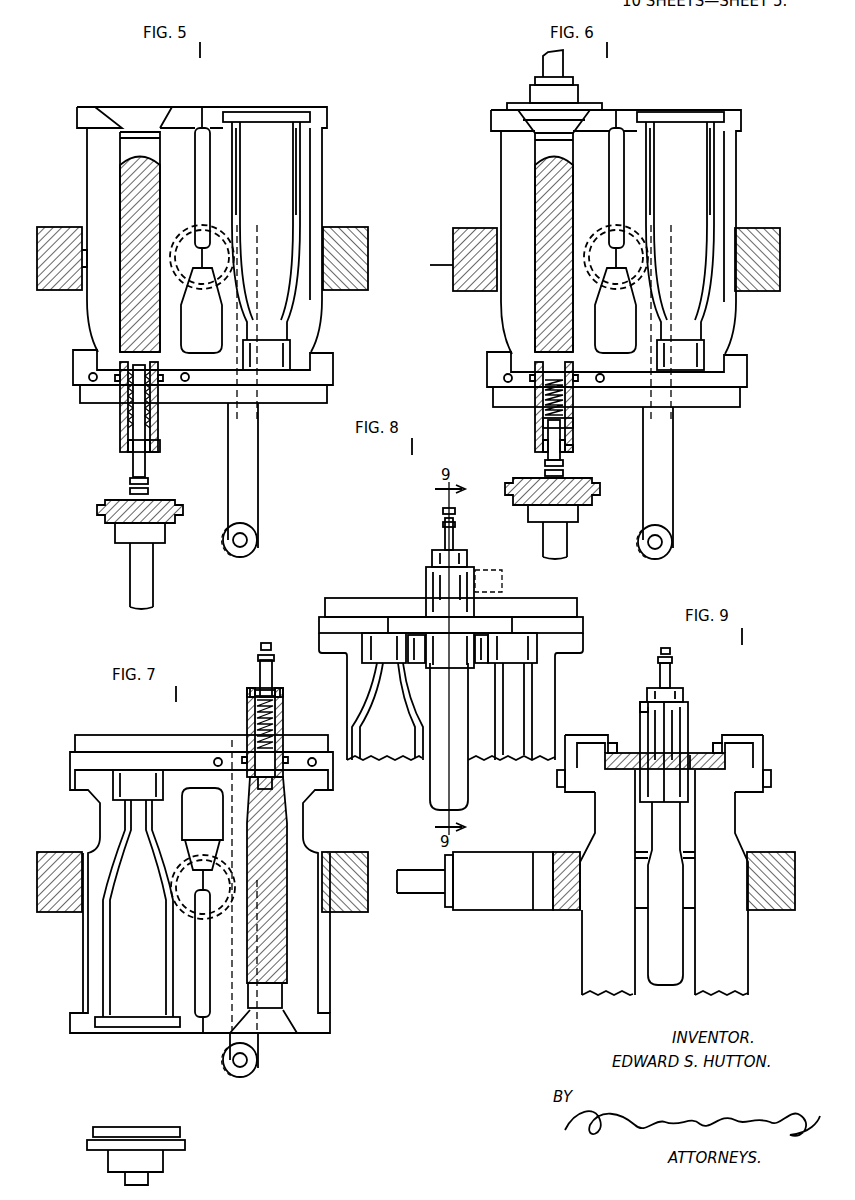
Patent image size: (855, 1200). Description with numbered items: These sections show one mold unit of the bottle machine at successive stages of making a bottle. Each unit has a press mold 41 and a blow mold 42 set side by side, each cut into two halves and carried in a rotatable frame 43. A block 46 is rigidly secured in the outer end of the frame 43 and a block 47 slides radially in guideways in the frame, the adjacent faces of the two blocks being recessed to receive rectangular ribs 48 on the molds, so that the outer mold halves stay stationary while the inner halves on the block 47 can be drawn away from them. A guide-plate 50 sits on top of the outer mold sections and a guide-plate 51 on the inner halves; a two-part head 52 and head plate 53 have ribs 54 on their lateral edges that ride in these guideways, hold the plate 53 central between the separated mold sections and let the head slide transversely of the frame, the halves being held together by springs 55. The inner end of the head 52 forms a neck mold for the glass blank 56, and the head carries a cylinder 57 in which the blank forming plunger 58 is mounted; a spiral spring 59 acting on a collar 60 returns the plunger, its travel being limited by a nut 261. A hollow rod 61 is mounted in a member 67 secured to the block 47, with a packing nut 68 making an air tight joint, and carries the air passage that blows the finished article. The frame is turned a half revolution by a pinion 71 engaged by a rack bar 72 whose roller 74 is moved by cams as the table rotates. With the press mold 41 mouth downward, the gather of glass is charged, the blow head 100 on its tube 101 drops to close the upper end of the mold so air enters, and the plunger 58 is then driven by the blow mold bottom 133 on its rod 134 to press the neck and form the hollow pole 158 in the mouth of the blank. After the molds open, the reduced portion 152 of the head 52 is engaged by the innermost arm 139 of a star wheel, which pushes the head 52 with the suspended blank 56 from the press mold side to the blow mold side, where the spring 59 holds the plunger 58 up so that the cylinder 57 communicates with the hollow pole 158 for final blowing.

In FIG. 5, the press mold 41 is at (96, 185).
In FIG. 6, the press mold 41 is at (510, 184).
In FIG. 8, the press mold 41 is at (522, 762).
In FIG. 7, the press mold 41 is at (318, 957).
In FIG. 5, the blow mold 42 is at (318, 183).
In FIG. 6, the blow mold 42 is at (732, 183).
In FIG. 8, the blow mold 42 is at (395, 763).
In FIG. 7, the blow mold 42 is at (84, 957).
In FIG. 5, the rotatable frame 43 is at (368, 263).
In FIG. 6, the rotatable frame 43 is at (780, 268).
In FIG. 7, the rotatable frame 43 is at (372, 850).
In FIG. 9, the rotatable frame 43 is at (543, 908).
In FIG. 9, the block 46 is at (764, 850).
In FIG. 9, the slidable block 47 is at (565, 850).
In FIG. 5, the rectangular ribs 48 is at (58, 263).
In FIG. 6, the rectangular ribs 48 is at (740, 258).
In FIG. 7, the rectangular ribs 48 is at (60, 888).
In FIG. 9, the rectangular ribs 48 is at (575, 910).
In FIG. 9, the guide-plate 50 is at (765, 742).
In FIG. 5, the guide-plate 51 is at (293, 404).
In FIG. 6, the guide-plate 51 is at (728, 399).
In FIG. 8, the guide-plate 51 is at (357, 600).
In FIG. 7, the guide-plate 51 is at (125, 748).
In FIG. 9, the guide-plate 51 is at (589, 740).
In FIG. 5, the head 52 is at (118, 420).
In FIG. 6, the head 52 is at (533, 418).
In FIG. 8, the head 52 is at (426, 580).
In FIG. 7, the head 52 is at (245, 712).
In FIG. 9, the head 52 is at (690, 716).
In FIG. 5, the head plate 53 is at (80, 384).
In FIG. 6, the head plate 53 is at (495, 384).
In FIG. 8, the head plate 53 is at (404, 622).
In FIG. 7, the head plate 53 is at (217, 756).
In FIG. 9, the head plate 53 is at (623, 752).
In FIG. 9, the ribs 54 is at (609, 742).
In FIG. 5, the springs 55 is at (92, 372).
In FIG. 6, the springs 55 is at (507, 372).
In FIG. 7, the springs 55 is at (312, 756).
In FIG. 9, the springs 55 is at (692, 754).
In FIG. 5, the glass blank 56 is at (128, 210).
In FIG. 6, the glass blank 56 is at (542, 211).
In FIG. 8, the glass blank 56 is at (462, 792).
In FIG. 7, the glass blank 56 is at (278, 845).
In FIG. 9, the glass blank 56 is at (655, 975).
In FIG. 5, the cylinder 57 is at (160, 431).
In FIG. 6, the cylinder 57 is at (573, 422).
In FIG. 8, the cylinder 57 is at (468, 558).
In FIG. 7, the cylinder 57 is at (284, 698).
In FIG. 9, the cylinder 57 is at (685, 695).
In FIG. 5, the blank forming plunger 58 is at (140, 409).
In FIG. 6, the blank forming plunger 58 is at (556, 436).
In FIG. 8, the blank forming plunger 58 is at (455, 538).
In FIG. 7, the blank forming plunger 58 is at (260, 675).
In FIG. 9, the blank forming plunger 58 is at (672, 672).
In FIG. 5, the spiral spring 59 is at (128, 440).
In FIG. 6, the spiral spring 59 is at (545, 408).
In FIG. 7, the spiral spring 59 is at (276, 706).
In FIG. 5, the collar 60 is at (133, 452).
In FIG. 6, the collar 60 is at (537, 444).
In FIG. 7, the collar 60 is at (280, 693).
In FIG. 9, the hollow rod 61 is at (421, 888).
In FIG. 9, the member 67 is at (484, 908).
In FIG. 9, the packing nut 68 is at (449, 908).
In FIG. 5, the gearwheel or pinion 71 is at (205, 306).
In FIG. 6, the gearwheel or pinion 71 is at (619, 306).
In FIG. 7, the gearwheel or pinion 71 is at (205, 847).
In FIG. 5, the rack bar 72 is at (258, 476).
In FIG. 6, the rack bar 72 is at (673, 467).
In FIG. 7, the rack bar 72 is at (258, 1046).
In FIG. 5, the roller 74 is at (225, 548).
In FIG. 6, the roller 74 is at (641, 554).
In FIG. 7, the roller 74 is at (225, 1068).
In FIG. 6, the blow head 100 is at (540, 115).
In FIG. 6, the tube 101 is at (548, 62).
In FIG. 5, the blow mold bottom 133 is at (106, 520).
In FIG. 6, the blow mold bottom 133 is at (580, 506).
In FIG. 7, the blow mold bottom 133 is at (180, 1145).
In FIG. 5, the rod 134 is at (132, 586).
In FIG. 6, the rod 134 is at (562, 548).
In FIG. 7, the rod 134 is at (125, 1181).
In FIG. 8, the innermost arm 139 is at (502, 581).
In FIG. 6, the reduced portion 152 is at (575, 452).
In FIG. 9, the reduced portion 152 is at (647, 692).
In FIG. 7, the hollow pole 158 is at (272, 788).
In FIG. 5, the nut 261 is at (150, 452).
In FIG. 6, the nut 261 is at (543, 454).
In FIG. 7, the nut 261 is at (276, 690).